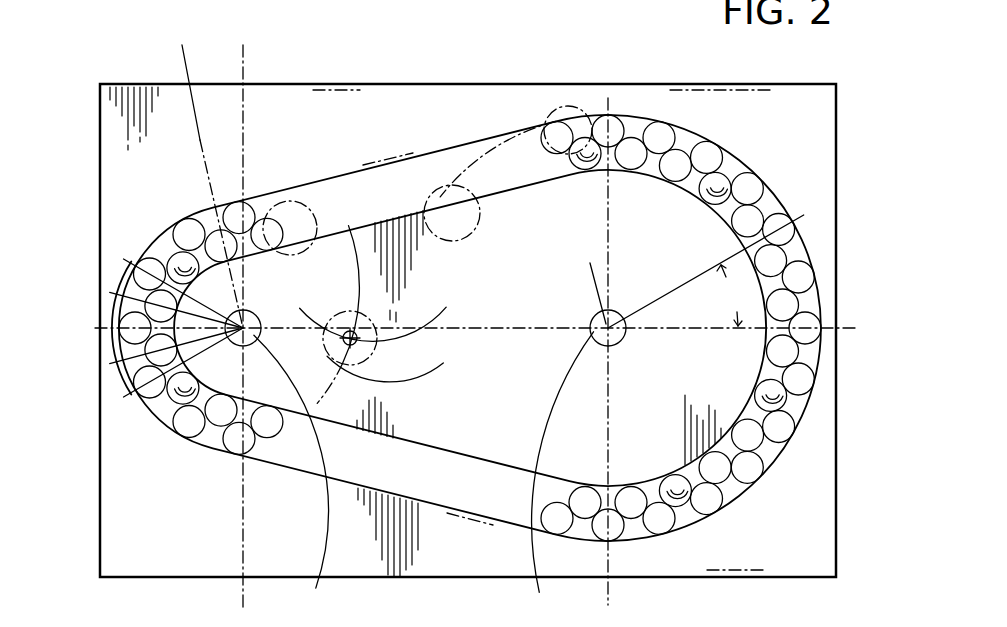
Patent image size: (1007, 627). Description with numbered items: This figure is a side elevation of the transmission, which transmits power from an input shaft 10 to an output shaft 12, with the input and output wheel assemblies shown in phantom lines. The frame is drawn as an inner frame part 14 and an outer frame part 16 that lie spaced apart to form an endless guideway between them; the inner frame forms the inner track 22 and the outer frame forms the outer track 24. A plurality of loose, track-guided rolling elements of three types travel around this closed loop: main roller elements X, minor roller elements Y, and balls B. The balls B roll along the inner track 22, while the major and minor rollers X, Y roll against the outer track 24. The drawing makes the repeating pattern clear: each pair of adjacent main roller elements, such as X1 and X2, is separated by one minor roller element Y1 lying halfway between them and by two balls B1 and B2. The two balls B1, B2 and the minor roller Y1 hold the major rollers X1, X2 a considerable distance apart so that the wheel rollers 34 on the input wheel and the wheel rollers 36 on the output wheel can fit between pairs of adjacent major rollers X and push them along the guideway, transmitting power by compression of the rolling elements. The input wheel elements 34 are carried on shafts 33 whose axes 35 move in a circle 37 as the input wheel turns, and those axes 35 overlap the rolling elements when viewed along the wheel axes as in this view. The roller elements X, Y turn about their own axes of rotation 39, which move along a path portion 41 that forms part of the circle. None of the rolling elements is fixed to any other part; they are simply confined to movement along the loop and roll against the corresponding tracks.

The input shaft 10 is at (291, 474).
The output shaft 12 is at (569, 438).
The inner frame part 14 is at (413, 195).
The outer frame part 16 is at (532, 95).
The inner track 22 is at (370, 227).
The outer track 24 is at (408, 213).
The shaft of input wheel element 33 is at (390, 263).
The input wheel element 34 is at (347, 233).
The axis of input wheel element 35 is at (332, 315).
The output wheel roller 36 is at (572, 102).
The circle 37 is at (404, 360).
The axis of rotation of roller element 39 is at (148, 404).
The path portion 41 is at (167, 294).
The main roller element X is at (143, 275).
The minor roller element Y is at (190, 228).
The ball B is at (183, 265).
The main roller element X1 is at (785, 428).
The main roller element X2 is at (815, 305).
The minor roller element Y1 is at (805, 379).
The ball B1 is at (783, 398).
The ball B2 is at (790, 352).